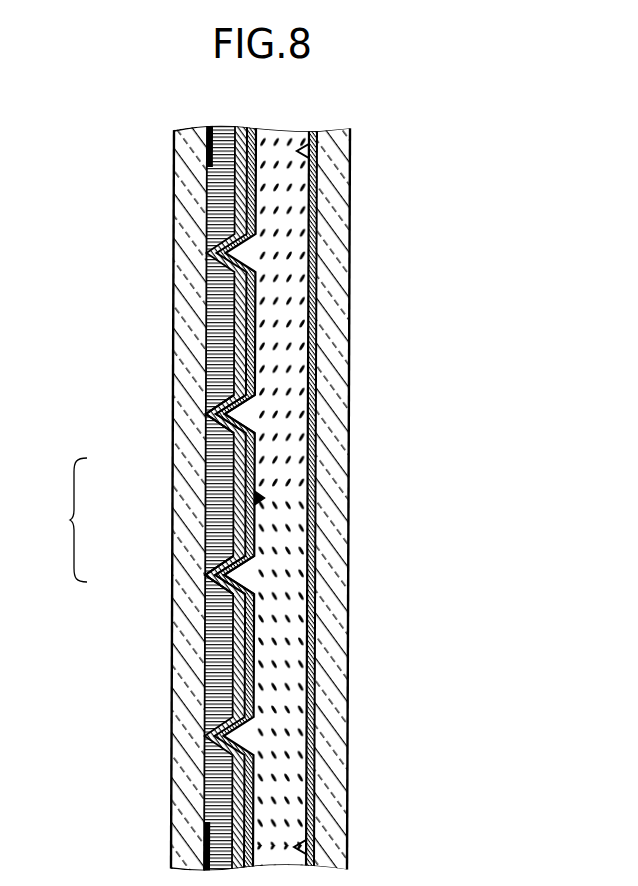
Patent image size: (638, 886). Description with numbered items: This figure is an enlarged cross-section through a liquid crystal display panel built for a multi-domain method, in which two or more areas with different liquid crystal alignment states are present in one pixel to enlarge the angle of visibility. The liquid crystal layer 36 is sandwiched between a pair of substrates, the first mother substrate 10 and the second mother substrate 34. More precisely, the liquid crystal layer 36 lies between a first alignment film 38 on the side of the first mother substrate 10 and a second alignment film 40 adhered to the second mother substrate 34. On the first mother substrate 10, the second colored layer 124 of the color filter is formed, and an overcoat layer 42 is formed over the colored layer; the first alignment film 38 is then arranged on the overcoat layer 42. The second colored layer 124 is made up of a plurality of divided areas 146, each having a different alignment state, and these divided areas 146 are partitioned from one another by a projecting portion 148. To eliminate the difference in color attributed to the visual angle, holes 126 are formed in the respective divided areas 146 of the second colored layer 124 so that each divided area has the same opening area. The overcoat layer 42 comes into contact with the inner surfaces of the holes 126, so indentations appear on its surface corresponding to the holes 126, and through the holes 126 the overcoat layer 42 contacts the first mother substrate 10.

The first mother substrate 10 is at (174, 328).
The second mother substrate 34 is at (350, 319).
The liquid crystal layer 36 is at (288, 260).
The first alignment film 38 is at (222, 390).
The second alignment film 40 is at (315, 388).
The overcoat layer 42 is at (212, 304).
The second colored layer 124 is at (130, 494).
The holes 126 is at (248, 577).
The divided areas 146 is at (206, 387).
The projecting portion 148 is at (266, 497).